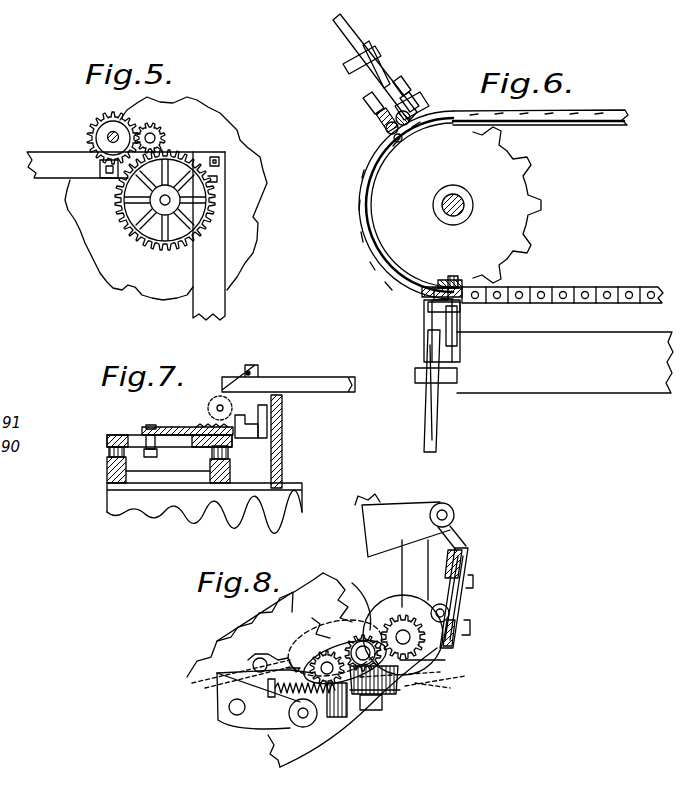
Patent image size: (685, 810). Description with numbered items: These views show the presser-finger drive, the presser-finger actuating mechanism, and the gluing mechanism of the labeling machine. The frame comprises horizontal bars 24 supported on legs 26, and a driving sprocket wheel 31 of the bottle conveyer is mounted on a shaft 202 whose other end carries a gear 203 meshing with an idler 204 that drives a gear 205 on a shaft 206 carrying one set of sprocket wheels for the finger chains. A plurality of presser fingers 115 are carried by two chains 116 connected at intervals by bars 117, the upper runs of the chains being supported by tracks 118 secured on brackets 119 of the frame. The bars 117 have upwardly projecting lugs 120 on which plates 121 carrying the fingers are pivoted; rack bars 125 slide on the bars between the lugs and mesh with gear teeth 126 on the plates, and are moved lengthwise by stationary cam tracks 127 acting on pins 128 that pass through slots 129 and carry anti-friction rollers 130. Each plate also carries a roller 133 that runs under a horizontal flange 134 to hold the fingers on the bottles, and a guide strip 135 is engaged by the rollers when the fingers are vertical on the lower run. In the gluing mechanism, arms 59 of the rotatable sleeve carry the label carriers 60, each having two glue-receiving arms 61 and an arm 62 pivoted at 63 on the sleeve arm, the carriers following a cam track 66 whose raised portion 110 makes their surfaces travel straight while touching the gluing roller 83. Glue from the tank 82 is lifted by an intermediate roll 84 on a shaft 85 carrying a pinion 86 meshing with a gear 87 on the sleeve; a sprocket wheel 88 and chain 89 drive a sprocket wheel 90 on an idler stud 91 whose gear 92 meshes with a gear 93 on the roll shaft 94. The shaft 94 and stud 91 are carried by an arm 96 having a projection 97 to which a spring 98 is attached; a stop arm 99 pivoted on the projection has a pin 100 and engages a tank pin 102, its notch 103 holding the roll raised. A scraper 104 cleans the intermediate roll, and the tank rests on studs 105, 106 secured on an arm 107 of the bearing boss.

In FIG. 5, the horizontal members or bars 24 is at (126, 165).
In FIG. 5, the legs 26 is at (209, 236).
In FIG. 5, the driving sprocket wheels 31 is at (166, 198).
In FIG. 5, the shaft 202 is at (163, 202).
In FIG. 5, the gear 203 is at (178, 152).
In FIG. 5, the idler 204 is at (160, 134).
In FIG. 5, the gear 205 is at (96, 133).
In FIG. 5, the shaft 206 is at (112, 152).
In FIG. 6, the presser fingers 115 is at (346, 30).
In FIG. 7, the presser fingers 115 is at (323, 374).
In FIG. 6, the chains 116 is at (602, 294).
In FIG. 7, the chains 116 is at (228, 450).
In FIG. 6, the strips or bars 117 is at (420, 110).
In FIG. 7, the strips or bars 117 is at (107, 440).
In FIG. 7, the bars or tracks 118 is at (168, 472).
In FIG. 7, the extensions or brackets 119 is at (204, 508).
In FIG. 6, the lugs 120 is at (403, 94).
In FIG. 7, the lugs 120 is at (214, 394).
In FIG. 6, the plates 121 is at (426, 355).
In FIG. 7, the plates 121 is at (247, 414).
In FIG. 6, the rack bars 125 is at (378, 122).
In FIG. 7, the rack bars 125 is at (142, 430).
In FIG. 7, the gear teeth 126 is at (205, 427).
In FIG. 6, the cam tracks 127 is at (366, 198).
In FIG. 6, the bolts or pins 128 is at (410, 126).
In FIG. 7, the bolts or pins 128 is at (158, 450).
In FIG. 6, the slots 129 is at (396, 135).
In FIG. 7, the slots 129 is at (170, 430).
In FIG. 6, the anti-friction rollers 130 is at (406, 140).
In FIG. 7, the anti-friction rollers 130 is at (114, 462).
In FIG. 6, the roller or wheel 133 is at (370, 52).
In FIG. 7, the roller or wheel 133 is at (262, 430).
In FIG. 7, the track or horizontal flange 134 is at (282, 411).
In FIG. 6, the track or guide strip 135 is at (565, 362).
In FIG. 8, the arms 59 is at (402, 525).
In FIG. 8, the label pickers or carriers 60 is at (466, 582).
In FIG. 8, the arms 61 is at (464, 554).
In FIG. 8, the arm 62 is at (458, 540).
In FIG. 8, the pivot 63 is at (454, 515).
In FIG. 8, the cam track 66 is at (415, 573).
In FIG. 8, the glue receptacle or tank 82 is at (386, 685).
In FIG. 8, the gluing roller 83 is at (396, 605).
In FIG. 8, the intermediate roll 84 is at (318, 656).
In FIG. 8, the shaft 85 is at (262, 652).
In FIG. 8, the pinion 86 is at (363, 632).
In FIG. 8, the gear 87 is at (333, 588).
In FIG. 8, the sprocket wheel 88 is at (300, 652).
In FIG. 8, the chain 89 is at (352, 630).
In FIG. 8, the sprocket wheel 90 is at (407, 675).
In FIG. 8, the idler shaft or stud 91 is at (445, 676).
In FIG. 8, the gear 92 is at (358, 597).
In FIG. 8, the gear 93 is at (408, 614).
In FIG. 8, the shaft 94 is at (445, 660).
In FIG. 8, the arm 96 is at (316, 620).
In FIG. 8, the rigid projection or part 97 is at (308, 729).
In FIG. 8, the spring 98 is at (251, 712).
In FIG. 8, the stop arm 99 is at (358, 707).
In FIG. 8, the pin 100 is at (345, 708).
In FIG. 8, the pin 102 is at (372, 700).
In FIG. 8, the notch 103 is at (390, 708).
In FIG. 8, the scraper 104 is at (259, 663).
In FIG. 8, the stud 105 is at (290, 730).
In FIG. 8, the stud 106 is at (232, 706).
In FIG. 8, the part or arm 107 is at (205, 694).
In FIG. 8, the raised portion 110 is at (450, 610).